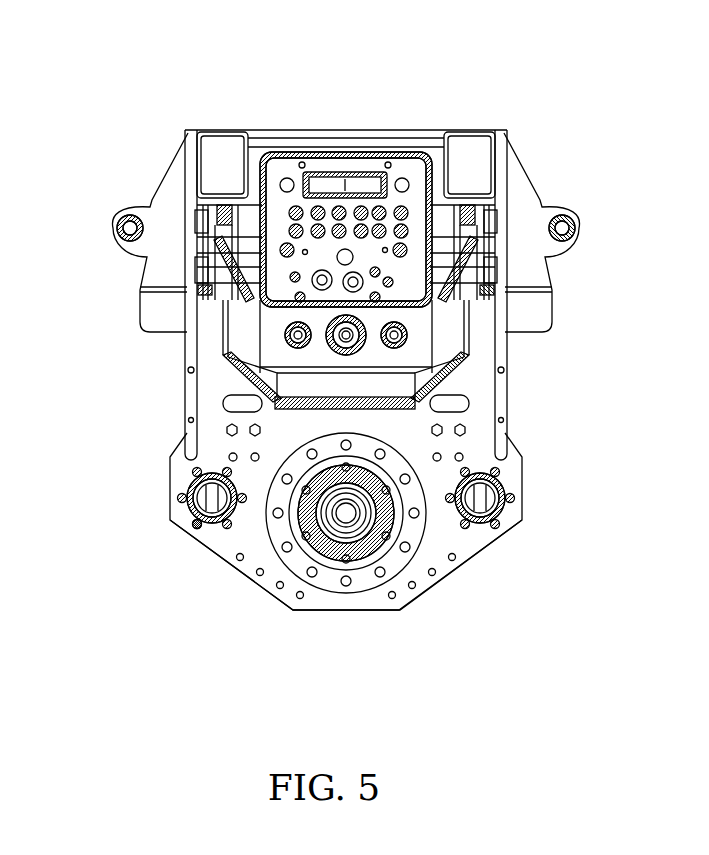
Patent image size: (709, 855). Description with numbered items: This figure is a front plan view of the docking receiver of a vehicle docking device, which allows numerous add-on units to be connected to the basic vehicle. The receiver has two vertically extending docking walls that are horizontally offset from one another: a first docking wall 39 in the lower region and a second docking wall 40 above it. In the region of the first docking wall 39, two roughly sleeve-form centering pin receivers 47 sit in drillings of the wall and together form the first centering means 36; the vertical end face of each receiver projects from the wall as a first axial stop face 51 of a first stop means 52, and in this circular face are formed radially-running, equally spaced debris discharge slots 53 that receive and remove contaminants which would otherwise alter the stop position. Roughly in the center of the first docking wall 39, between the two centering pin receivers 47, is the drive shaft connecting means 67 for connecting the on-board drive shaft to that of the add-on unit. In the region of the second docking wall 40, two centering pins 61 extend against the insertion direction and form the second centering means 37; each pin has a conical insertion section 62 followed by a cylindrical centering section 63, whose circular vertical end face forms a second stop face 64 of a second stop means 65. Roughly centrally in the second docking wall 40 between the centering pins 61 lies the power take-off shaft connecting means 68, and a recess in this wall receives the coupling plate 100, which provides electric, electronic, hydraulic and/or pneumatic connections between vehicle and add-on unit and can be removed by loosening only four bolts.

The coupling plate 100 is at (352, 157).
The second docking wall 40 is at (423, 143).
The power take-off shaft connection means 68 is at (472, 207).
The centering pin 61 is at (542, 314).
The insertion section 62 is at (542, 314).
The centering section 63 is at (407, 333).
The second stop face 64 is at (166, 355).
The second stop means 65 is at (287, 341).
The second centering means 37 is at (402, 340).
The first axial stop face 51 is at (137, 474).
The first stop means 52 is at (188, 483).
The first centering means 36 is at (505, 488).
The centering pin receiver 47 is at (207, 497).
The debris discharge slots 53 is at (193, 526).
The first docking wall 39 is at (440, 527).
The drive shaft connecting means 67 is at (395, 562).